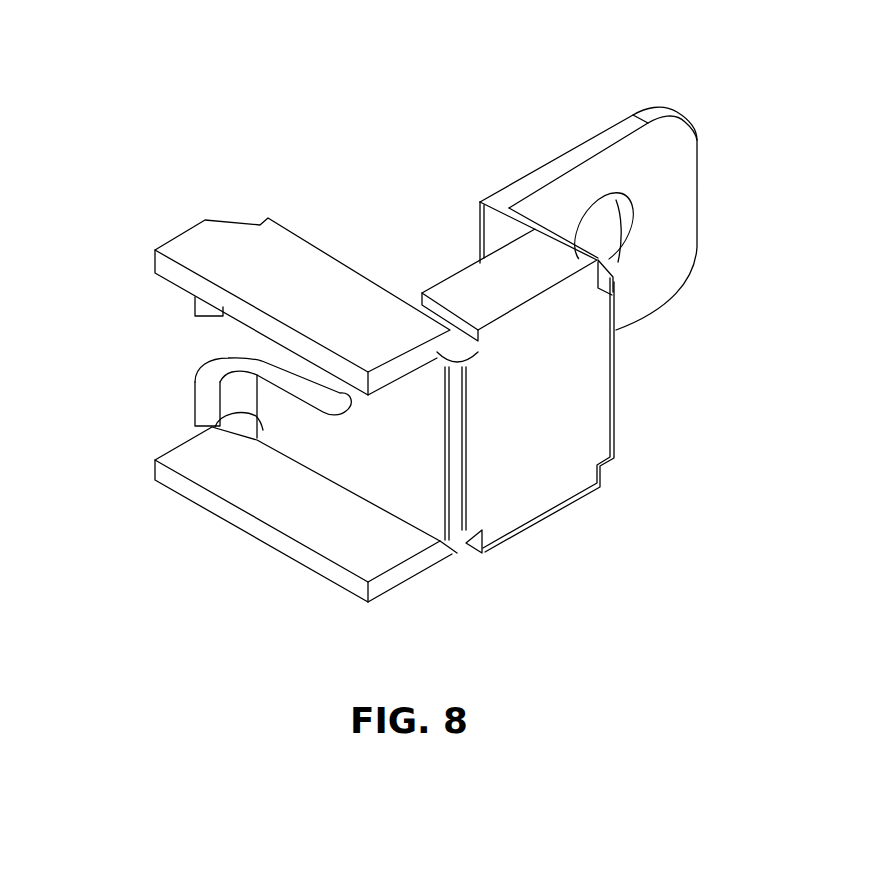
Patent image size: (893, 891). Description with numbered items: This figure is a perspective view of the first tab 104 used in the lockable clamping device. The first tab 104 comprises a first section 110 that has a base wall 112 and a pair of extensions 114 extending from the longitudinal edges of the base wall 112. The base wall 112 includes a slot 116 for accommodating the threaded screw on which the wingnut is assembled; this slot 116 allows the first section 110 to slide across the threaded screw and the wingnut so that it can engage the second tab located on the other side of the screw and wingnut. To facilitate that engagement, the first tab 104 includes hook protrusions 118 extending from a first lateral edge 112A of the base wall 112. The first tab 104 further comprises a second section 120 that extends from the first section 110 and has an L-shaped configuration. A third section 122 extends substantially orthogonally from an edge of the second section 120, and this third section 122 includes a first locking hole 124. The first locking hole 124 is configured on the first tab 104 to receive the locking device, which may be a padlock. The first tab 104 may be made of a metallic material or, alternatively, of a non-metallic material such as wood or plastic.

The first tab 104 is at (258, 77).
The first section 110 is at (154, 517).
The base wall 112 is at (393, 475).
The first lateral edge 112A is at (260, 404).
The extensions 114 is at (170, 264).
The slot 116 is at (282, 358).
The hook protrusions 118 is at (196, 303).
The second section 120 is at (582, 405).
The third section 122 is at (672, 148).
The first locking hole 124 is at (623, 232).